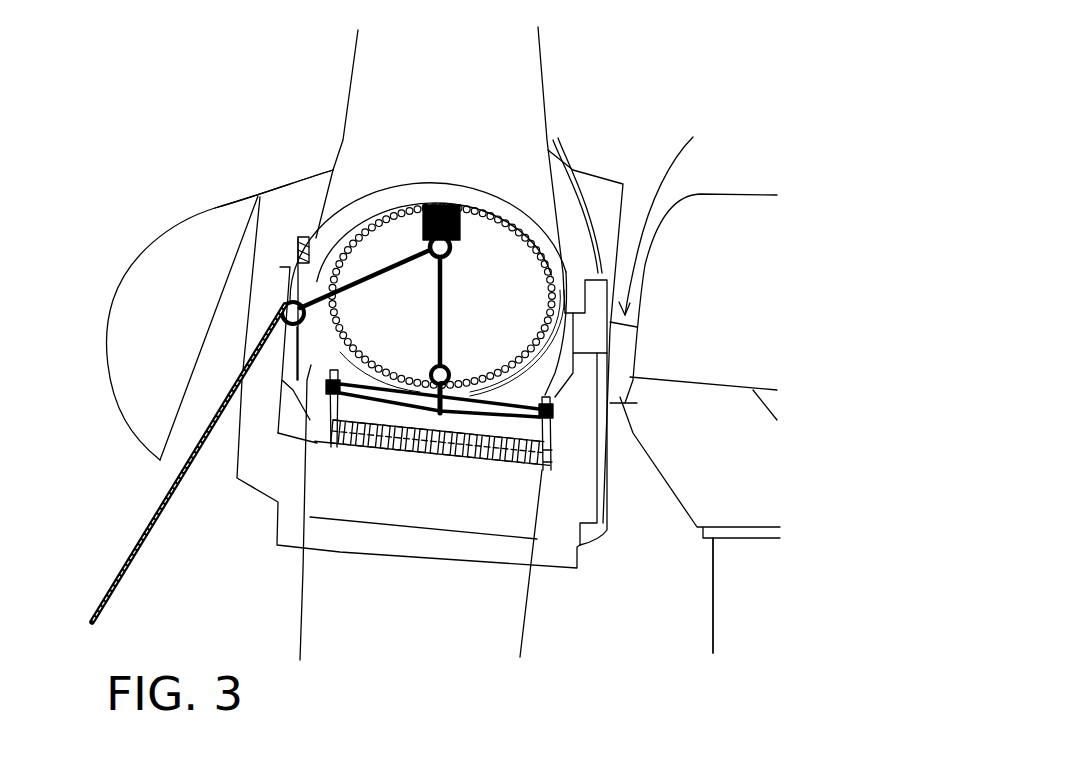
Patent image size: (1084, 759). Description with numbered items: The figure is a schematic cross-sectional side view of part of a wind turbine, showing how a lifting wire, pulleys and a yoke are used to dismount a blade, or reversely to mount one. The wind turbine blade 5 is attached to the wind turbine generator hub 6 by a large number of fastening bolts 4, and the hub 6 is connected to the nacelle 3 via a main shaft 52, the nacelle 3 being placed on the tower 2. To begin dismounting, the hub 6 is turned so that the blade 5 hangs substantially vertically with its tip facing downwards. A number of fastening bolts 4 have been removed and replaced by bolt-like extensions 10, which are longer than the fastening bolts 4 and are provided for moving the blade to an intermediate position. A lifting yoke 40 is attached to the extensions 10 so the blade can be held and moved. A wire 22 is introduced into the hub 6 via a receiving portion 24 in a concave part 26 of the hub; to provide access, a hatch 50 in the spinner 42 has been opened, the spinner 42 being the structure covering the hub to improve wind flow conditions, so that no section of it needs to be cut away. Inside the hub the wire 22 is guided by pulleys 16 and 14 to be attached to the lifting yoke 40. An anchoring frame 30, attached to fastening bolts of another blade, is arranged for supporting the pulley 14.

The tower 2 is at (712, 612).
The nacelle 3 is at (740, 185).
The fastening bolts 4 is at (408, 462).
The wind turbine blade 5 is at (529, 70).
The wind turbine generator hub 6 is at (205, 125).
The bolt-like extensions 10 is at (540, 437).
The pulley 14 is at (453, 257).
The pulley 16 is at (308, 322).
The wire 22 is at (105, 605).
The receiving portion 24 is at (287, 353).
The concave part 26 is at (316, 238).
The anchoring frame 30 is at (465, 230).
The lifting yoke 40 is at (515, 360).
The spinner 42 is at (140, 254).
The hatch 50 is at (274, 189).
The main shaft 52 is at (678, 218).